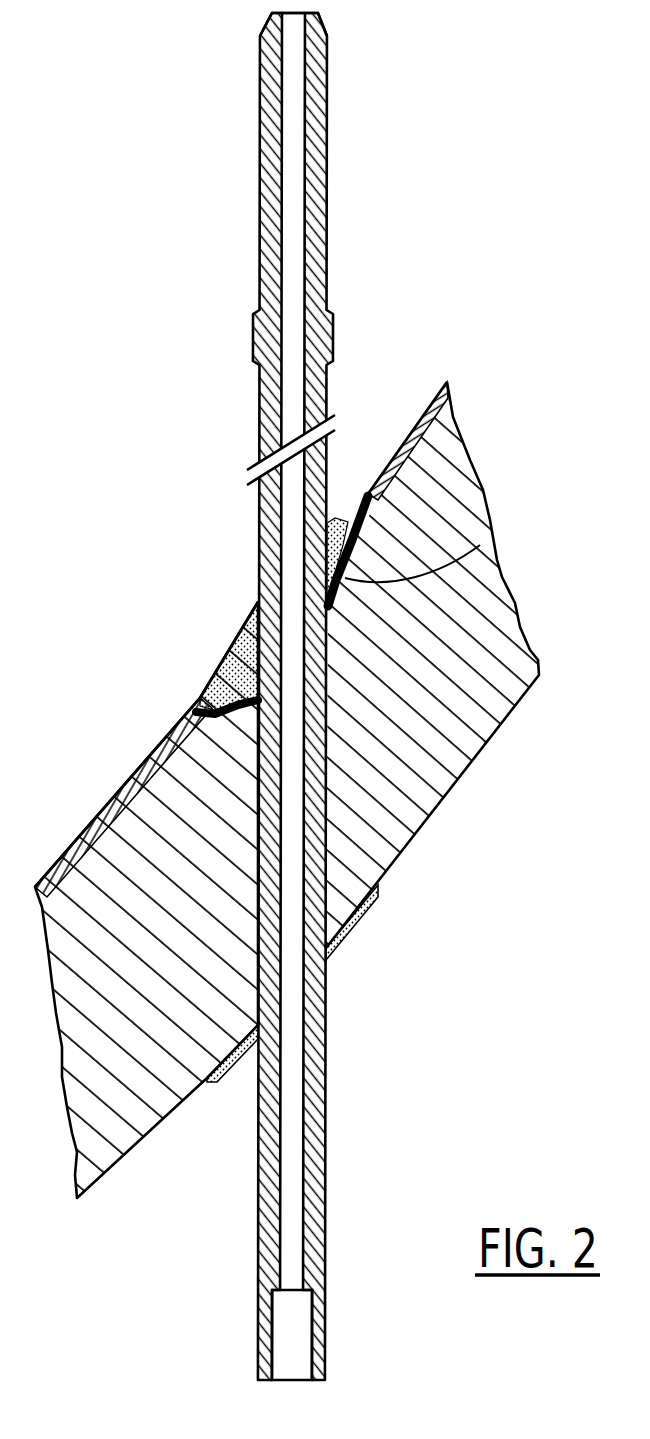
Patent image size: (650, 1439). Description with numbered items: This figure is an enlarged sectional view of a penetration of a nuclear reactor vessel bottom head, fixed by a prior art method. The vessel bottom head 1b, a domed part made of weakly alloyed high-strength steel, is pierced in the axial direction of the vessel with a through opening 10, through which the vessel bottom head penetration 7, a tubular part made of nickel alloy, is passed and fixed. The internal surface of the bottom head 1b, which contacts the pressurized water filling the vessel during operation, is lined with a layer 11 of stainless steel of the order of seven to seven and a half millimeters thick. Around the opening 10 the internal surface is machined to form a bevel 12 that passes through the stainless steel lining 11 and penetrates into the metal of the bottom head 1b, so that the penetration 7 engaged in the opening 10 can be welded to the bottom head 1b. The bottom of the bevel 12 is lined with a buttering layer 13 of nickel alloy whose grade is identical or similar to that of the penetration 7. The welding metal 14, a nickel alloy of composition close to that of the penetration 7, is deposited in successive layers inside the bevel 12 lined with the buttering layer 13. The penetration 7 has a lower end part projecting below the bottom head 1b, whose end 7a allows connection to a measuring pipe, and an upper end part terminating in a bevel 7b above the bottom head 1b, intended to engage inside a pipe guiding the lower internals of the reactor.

The vessel bottom head penetration 7 is at (338, 692).
The end of lower end part 7a is at (318, 1345).
The bevel of upper end part 7b is at (318, 28).
The vessel bottom head 1b is at (495, 660).
The through opening 10 is at (327, 851).
The stainless steel lining layer 11 is at (452, 420).
The bevel 12 is at (480, 545).
The buttering layer 13 is at (353, 507).
The welding metal 14 is at (238, 652).